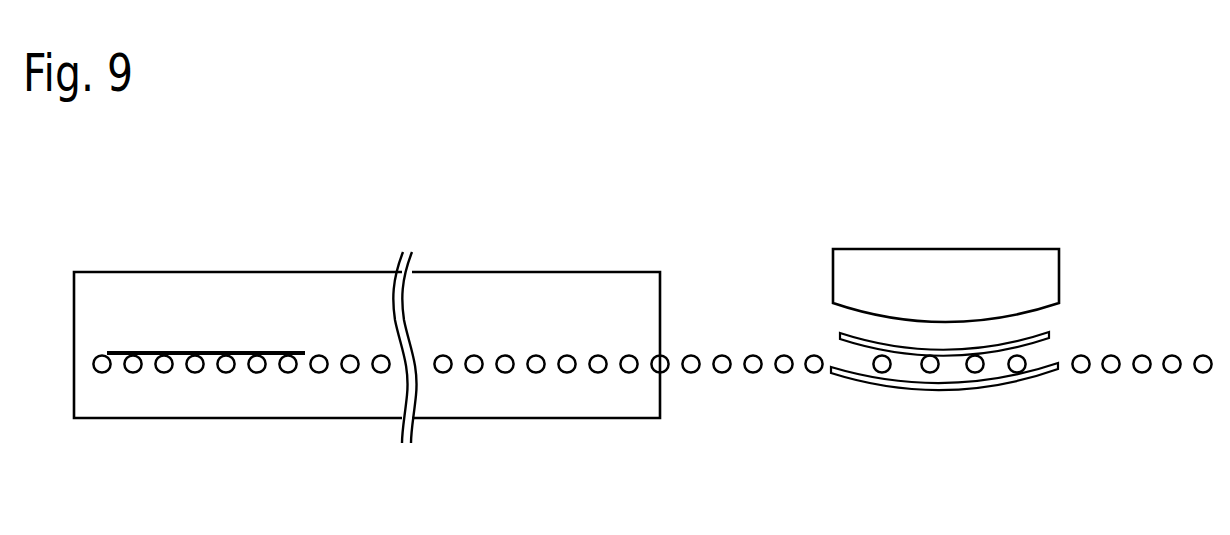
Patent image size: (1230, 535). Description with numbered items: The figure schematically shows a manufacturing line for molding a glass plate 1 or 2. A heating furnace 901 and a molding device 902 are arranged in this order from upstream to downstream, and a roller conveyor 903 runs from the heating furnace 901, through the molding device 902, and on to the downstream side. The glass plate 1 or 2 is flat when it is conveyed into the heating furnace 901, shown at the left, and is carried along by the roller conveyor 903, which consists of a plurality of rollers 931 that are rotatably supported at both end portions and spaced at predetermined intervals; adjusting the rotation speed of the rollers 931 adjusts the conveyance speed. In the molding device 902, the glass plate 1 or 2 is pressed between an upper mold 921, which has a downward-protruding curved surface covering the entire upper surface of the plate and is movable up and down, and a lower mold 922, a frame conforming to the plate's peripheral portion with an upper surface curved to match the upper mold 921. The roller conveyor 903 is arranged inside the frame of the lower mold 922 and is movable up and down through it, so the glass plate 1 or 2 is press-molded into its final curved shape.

The glass plate 1 is at (578, 276).
The glass plate 2 is at (198, 352).
The heating furnace 901 is at (558, 204).
The molding device 902 is at (974, 318).
The roller conveyor 903 is at (726, 400).
The upper mold 921 is at (1047, 285).
The lower mold 922 is at (915, 389).
The rollers 931 is at (567, 373).